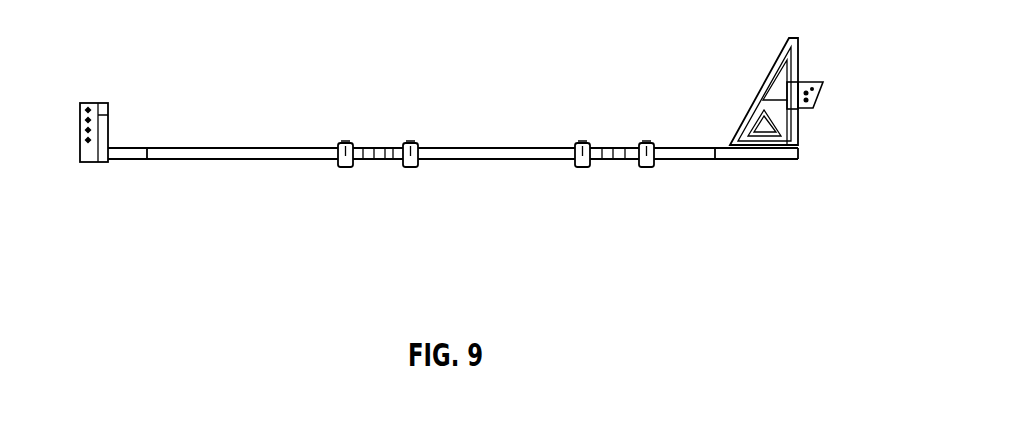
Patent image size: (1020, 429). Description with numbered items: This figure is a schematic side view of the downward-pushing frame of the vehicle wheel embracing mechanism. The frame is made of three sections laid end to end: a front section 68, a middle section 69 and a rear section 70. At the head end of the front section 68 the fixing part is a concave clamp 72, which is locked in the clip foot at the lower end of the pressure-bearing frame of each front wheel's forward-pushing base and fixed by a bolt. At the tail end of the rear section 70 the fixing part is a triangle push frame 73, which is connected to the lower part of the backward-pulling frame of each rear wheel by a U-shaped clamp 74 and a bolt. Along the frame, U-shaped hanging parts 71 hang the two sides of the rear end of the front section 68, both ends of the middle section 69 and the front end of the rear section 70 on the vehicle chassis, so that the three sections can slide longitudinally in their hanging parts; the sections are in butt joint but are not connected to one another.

The front section of downward-pushing frame 68 is at (185, 155).
The middle section of downward-pushing frame 69 is at (452, 155).
The rear section of downward-pushing frame 70 is at (692, 153).
The U-shaped hanging part 71 is at (346, 152).
The concave clamp 72 is at (87, 163).
The triangle push frame 73 is at (766, 98).
The U-shaped clamp 74 is at (799, 113).